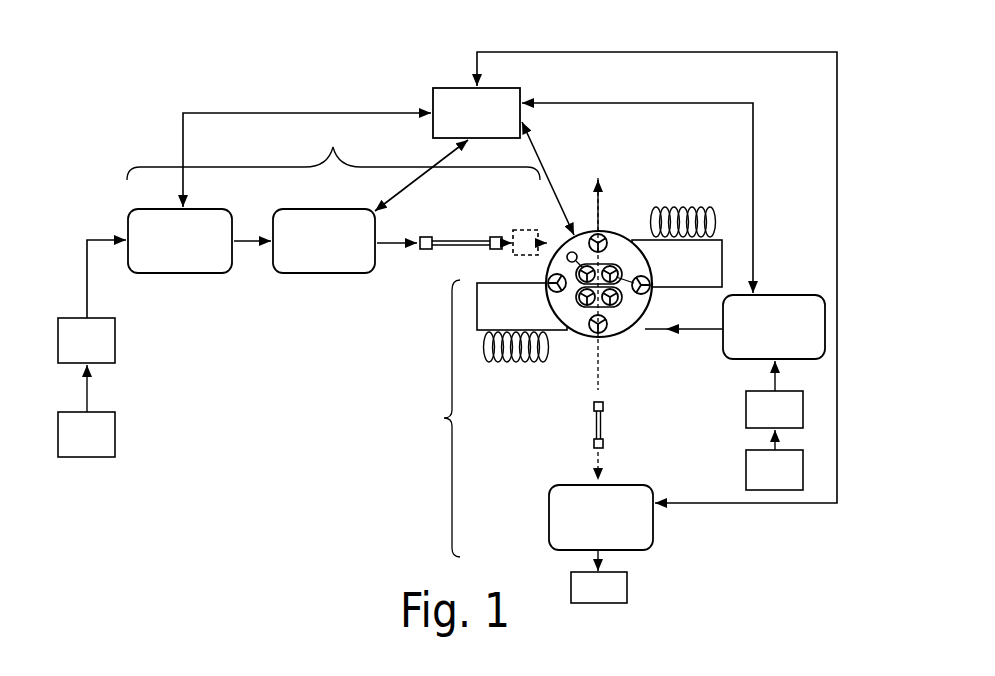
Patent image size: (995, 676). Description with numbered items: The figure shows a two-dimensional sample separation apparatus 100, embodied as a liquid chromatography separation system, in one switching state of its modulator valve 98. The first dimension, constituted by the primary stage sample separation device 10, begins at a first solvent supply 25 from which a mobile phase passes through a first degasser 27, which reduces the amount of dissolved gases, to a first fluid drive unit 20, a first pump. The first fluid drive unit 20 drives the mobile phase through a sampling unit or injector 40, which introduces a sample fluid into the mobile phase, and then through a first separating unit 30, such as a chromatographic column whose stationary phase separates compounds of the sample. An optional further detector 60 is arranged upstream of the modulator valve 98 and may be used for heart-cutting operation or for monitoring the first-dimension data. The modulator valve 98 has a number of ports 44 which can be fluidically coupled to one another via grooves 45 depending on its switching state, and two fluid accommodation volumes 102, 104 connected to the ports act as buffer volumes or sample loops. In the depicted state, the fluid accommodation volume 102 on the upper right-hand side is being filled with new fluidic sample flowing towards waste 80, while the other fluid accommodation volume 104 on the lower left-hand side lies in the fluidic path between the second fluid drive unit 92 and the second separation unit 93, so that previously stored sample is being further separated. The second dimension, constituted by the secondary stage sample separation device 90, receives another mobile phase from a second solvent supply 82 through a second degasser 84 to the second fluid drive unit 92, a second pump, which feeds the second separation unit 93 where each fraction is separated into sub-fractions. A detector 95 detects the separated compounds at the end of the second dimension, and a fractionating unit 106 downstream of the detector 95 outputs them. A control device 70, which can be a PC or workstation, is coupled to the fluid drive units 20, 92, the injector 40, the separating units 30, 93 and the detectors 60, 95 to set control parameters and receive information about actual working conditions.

The sample separation apparatus 100 is at (150, 146).
The primary stage sample separation device 10 is at (333, 149).
The first fluid drive unit 20 is at (177, 257).
The sampling unit or injector 40 is at (320, 257).
The first separating unit 30 is at (437, 240).
The further detector 60 is at (523, 229).
The control device 70 is at (458, 88).
The waste 80 is at (594, 182).
The modulator valve 98 is at (613, 268).
The grooves 45 is at (605, 235).
The ports 44 is at (566, 291).
The fluid accommodation volume 102 is at (678, 205).
The fluid accommodation volume 104 is at (508, 364).
The second fluid drive unit 92 is at (780, 293).
The second degasser 84 is at (746, 412).
The second solvent supply 82 is at (746, 472).
The second separation unit 93 is at (596, 430).
The detector 95 is at (653, 518).
The fractionating unit 106 is at (627, 590).
The secondary stage sample separation device 90 is at (432, 418).
The first degasser 27 is at (115, 342).
The first solvent supply 25 is at (115, 437).